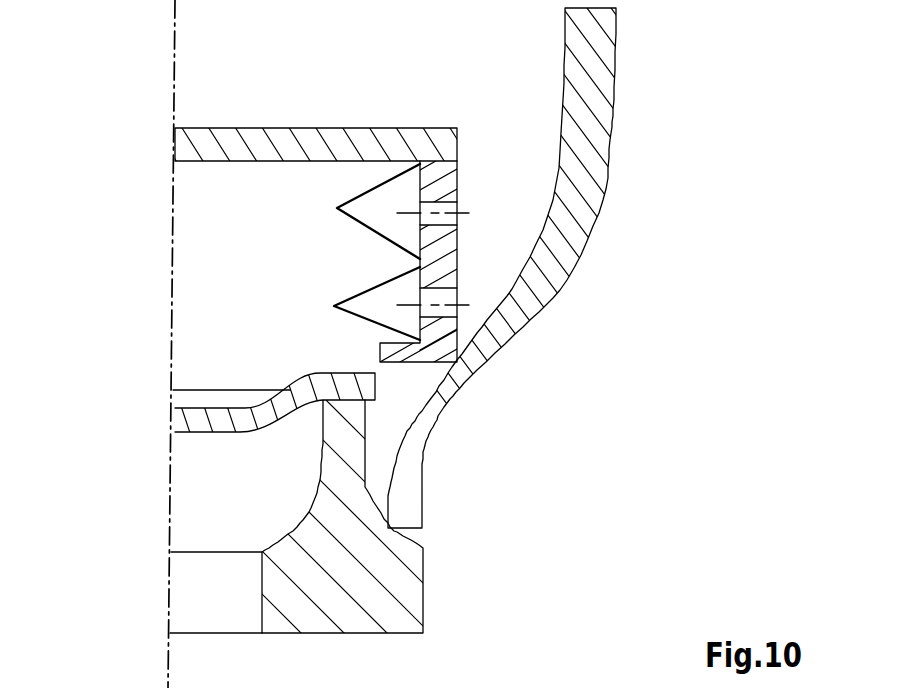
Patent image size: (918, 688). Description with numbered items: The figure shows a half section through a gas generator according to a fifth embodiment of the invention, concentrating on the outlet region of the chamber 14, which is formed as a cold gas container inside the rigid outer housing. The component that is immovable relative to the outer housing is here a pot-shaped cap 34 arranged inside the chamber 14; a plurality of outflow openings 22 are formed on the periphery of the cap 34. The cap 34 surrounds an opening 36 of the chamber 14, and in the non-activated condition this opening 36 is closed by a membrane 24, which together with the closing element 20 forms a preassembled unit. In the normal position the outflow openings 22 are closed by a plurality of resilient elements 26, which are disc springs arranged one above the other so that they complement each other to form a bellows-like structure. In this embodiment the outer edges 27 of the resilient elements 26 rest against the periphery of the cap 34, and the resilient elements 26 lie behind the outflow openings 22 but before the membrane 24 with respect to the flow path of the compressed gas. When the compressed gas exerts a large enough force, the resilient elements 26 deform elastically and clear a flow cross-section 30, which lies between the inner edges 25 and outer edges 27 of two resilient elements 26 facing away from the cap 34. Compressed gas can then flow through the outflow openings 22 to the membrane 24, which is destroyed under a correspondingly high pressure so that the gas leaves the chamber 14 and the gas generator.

The chamber 14 is at (308, 28).
The closing element 20 is at (400, 573).
The outflow openings 22 is at (452, 203).
The membrane 24 is at (177, 422).
The inner edges 25 is at (345, 216).
The resilient elements 26 is at (356, 192).
The outer edges 27 is at (420, 162).
The flow cross-section 30 is at (318, 311).
The pot-shaped cap 34 is at (375, 142).
The opening 36 is at (202, 568).